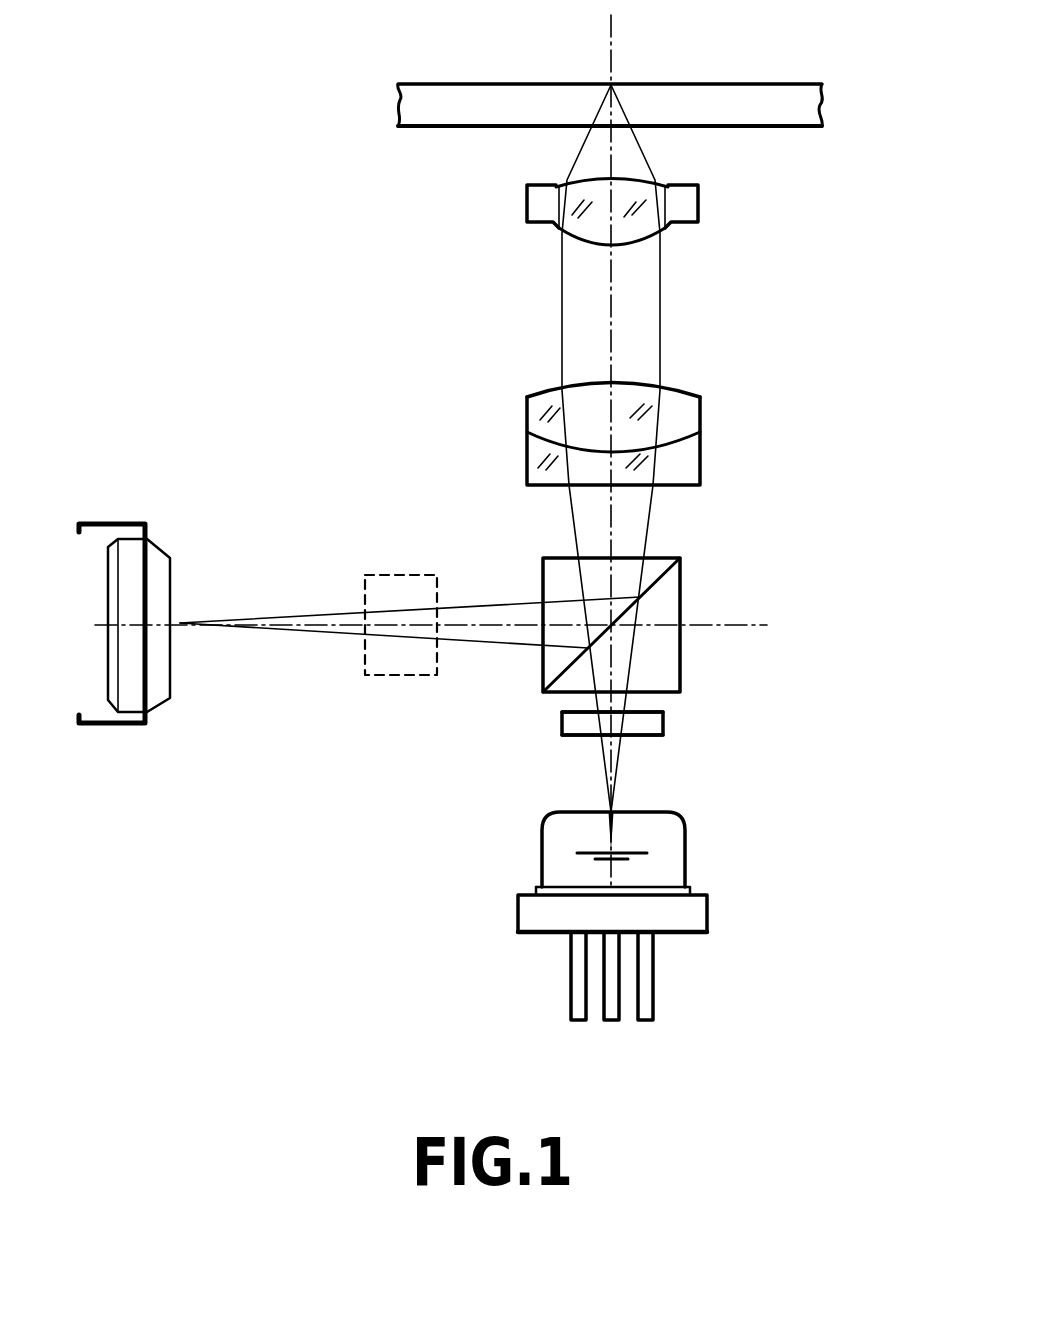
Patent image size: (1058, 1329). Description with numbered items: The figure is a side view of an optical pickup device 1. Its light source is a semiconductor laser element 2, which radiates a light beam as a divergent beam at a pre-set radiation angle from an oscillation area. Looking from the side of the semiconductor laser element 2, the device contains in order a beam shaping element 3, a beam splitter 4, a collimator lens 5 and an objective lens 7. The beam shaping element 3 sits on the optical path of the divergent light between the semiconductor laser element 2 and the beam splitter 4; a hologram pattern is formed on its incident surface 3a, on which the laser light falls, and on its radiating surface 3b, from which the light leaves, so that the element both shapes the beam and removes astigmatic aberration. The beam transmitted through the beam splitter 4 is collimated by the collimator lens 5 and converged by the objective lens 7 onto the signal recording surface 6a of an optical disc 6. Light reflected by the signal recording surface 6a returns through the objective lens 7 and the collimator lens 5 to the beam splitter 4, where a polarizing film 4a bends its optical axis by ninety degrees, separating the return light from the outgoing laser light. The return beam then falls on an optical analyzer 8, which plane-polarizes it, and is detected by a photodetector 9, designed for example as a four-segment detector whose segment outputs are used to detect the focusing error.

The optical pickup device 1 is at (210, 296).
The semiconductor laser element 2 is at (683, 855).
The beam shaping element 3 is at (663, 723).
The incident surface 3a is at (577, 735).
The radiating surface 3b is at (574, 712).
The beam splitter 4 is at (682, 597).
The polarizing film 4a is at (660, 560).
The collimator lens 5 is at (680, 402).
The optical disc 6 is at (790, 118).
The signal recording surface 6a is at (758, 83).
The objective lens 7 is at (698, 207).
The optical analyzer 8 is at (403, 575).
The photodetector 9 is at (162, 675).